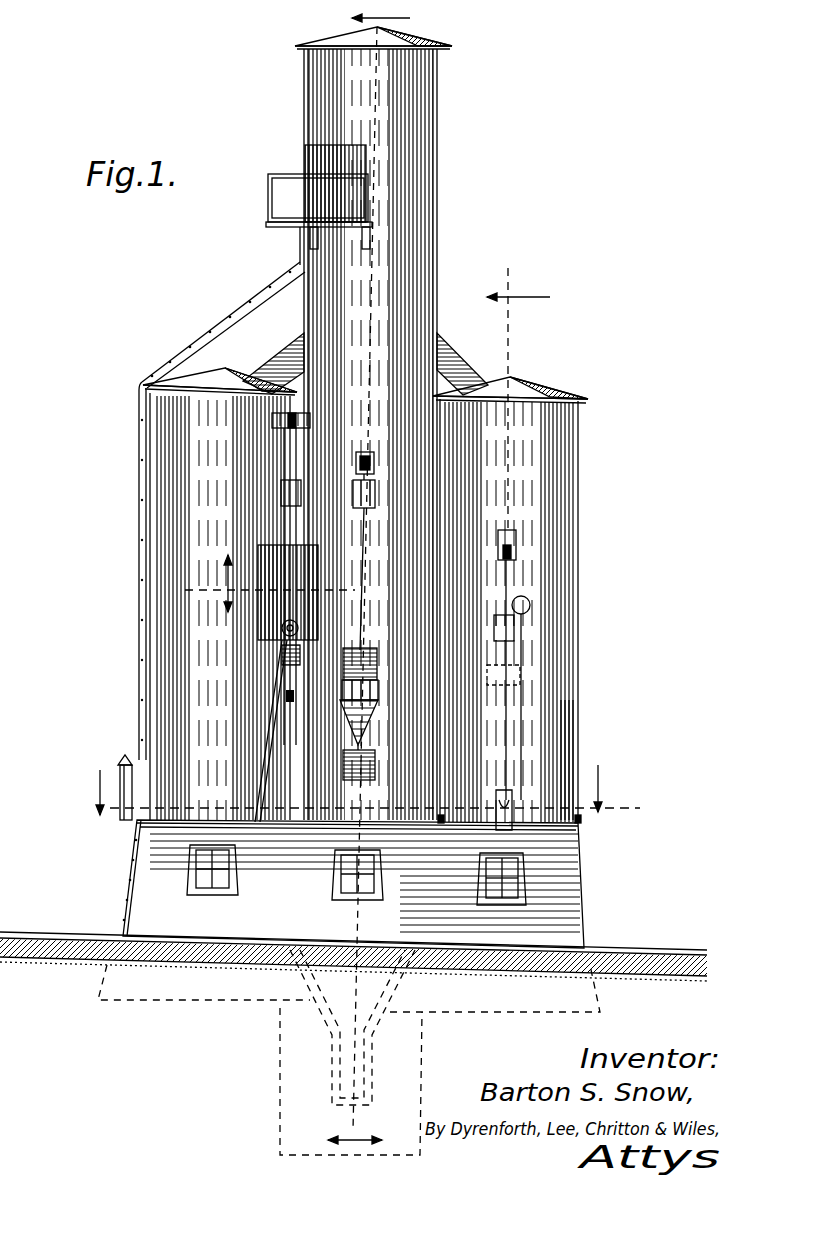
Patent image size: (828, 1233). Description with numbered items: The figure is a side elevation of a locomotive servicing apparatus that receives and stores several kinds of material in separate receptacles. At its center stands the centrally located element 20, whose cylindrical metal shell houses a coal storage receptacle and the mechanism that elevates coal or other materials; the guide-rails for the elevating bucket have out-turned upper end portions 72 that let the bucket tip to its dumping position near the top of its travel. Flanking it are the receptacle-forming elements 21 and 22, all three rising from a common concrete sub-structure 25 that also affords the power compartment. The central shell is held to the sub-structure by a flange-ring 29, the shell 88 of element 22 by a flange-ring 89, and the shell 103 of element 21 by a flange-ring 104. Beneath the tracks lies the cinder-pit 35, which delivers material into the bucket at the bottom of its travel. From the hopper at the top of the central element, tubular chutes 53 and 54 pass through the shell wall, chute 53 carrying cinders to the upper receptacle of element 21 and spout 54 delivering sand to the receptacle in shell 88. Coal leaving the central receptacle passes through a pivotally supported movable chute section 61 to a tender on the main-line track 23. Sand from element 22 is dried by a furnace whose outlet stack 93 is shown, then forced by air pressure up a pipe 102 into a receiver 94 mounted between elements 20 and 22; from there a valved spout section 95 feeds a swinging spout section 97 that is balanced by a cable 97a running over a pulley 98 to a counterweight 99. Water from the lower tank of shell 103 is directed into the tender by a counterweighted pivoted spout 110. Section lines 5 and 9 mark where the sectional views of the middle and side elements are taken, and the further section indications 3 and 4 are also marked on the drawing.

The centrally located element 20 is at (430, 150).
The receptacle-forming element 21 is at (558, 510).
The receptacle-forming element 22 is at (175, 512).
The main-line track 23 is at (62, 935).
The sub-structure 25 is at (572, 888).
The flange-ring 29 is at (306, 826).
The cinder-pit 35 is at (368, 1055).
The tubular chute 53 is at (282, 366).
The tubular chute 54 is at (455, 368).
The movable chute section 61 is at (356, 775).
The out-turned upper end portions 72 is at (228, 590).
The shell 88 is at (142, 705).
The flange-ring 89 is at (132, 820).
The outlet stack 93 is at (122, 764).
The receiver 94 is at (300, 582).
The spout section 95 is at (286, 624).
The swinging spout section 97 is at (284, 720).
The cable 97a is at (300, 458).
The pulley 98 is at (272, 420).
The counterweight 99 is at (281, 490).
The pipe 102 is at (268, 700).
The shell 103 is at (560, 765).
The flange-ring 104 is at (575, 825).
The pivoted spout 110 is at (496, 808).
The section line 3- 3 is at (358, 795).
The section line 4- 4 is at (355, 1148).
The section line 5 is at (381, 565).
The section line 9 is at (518, 389).